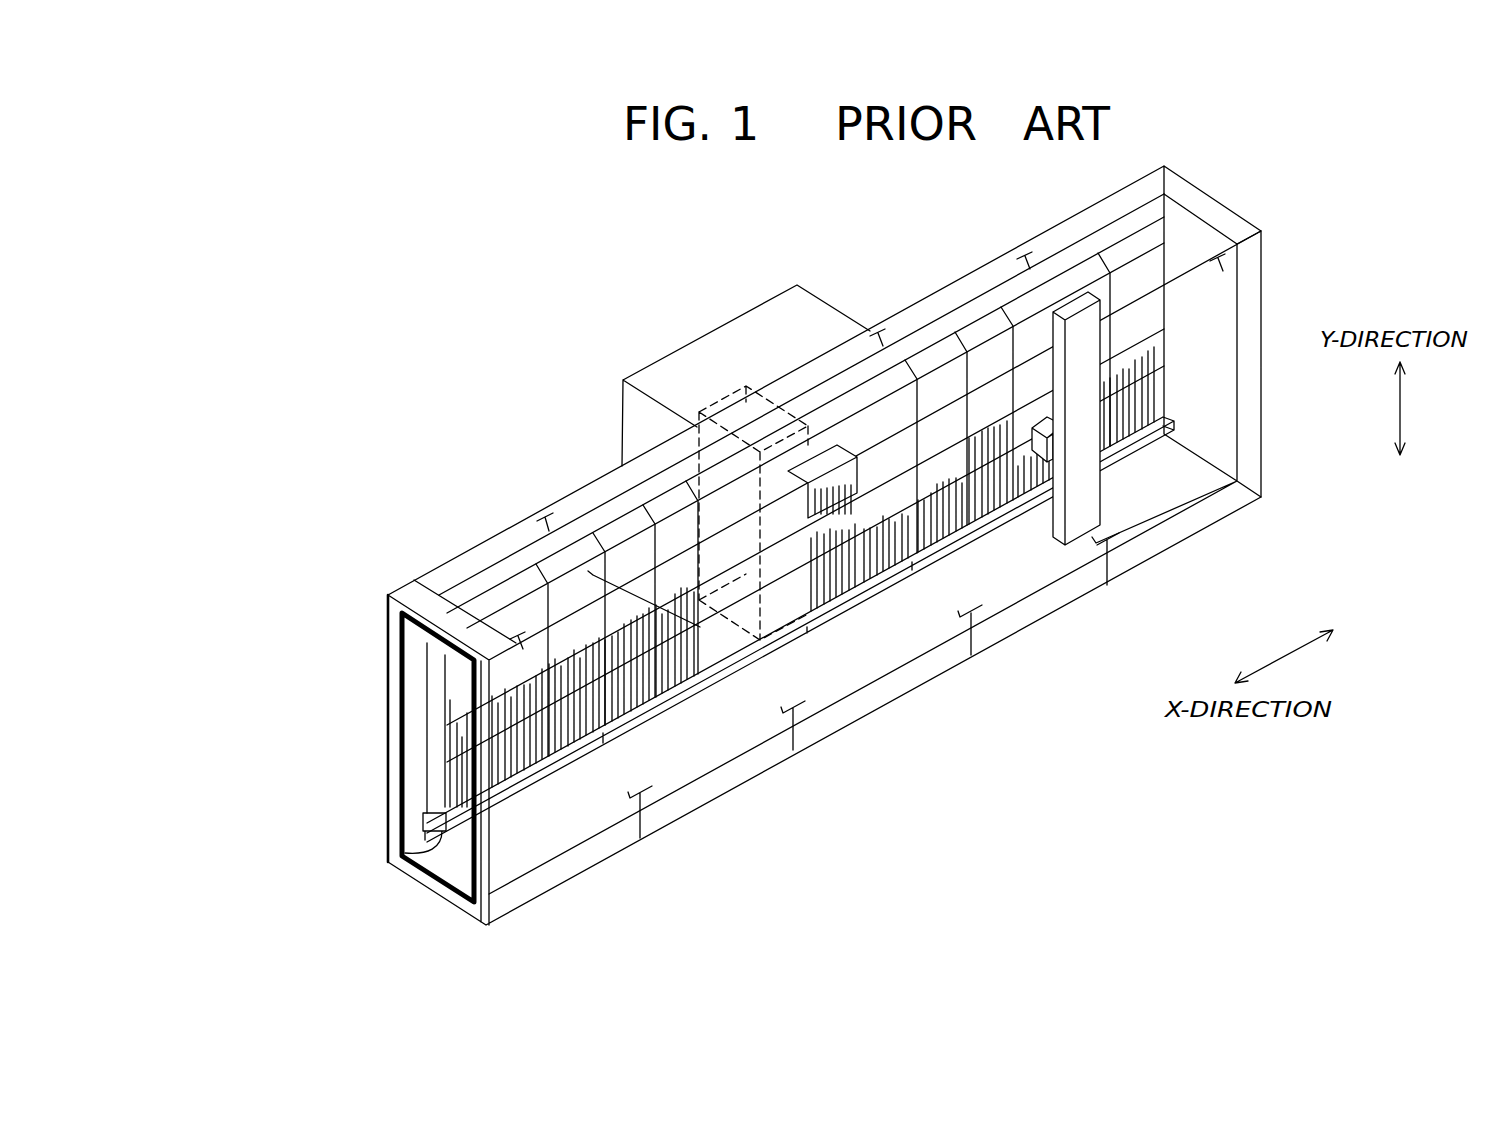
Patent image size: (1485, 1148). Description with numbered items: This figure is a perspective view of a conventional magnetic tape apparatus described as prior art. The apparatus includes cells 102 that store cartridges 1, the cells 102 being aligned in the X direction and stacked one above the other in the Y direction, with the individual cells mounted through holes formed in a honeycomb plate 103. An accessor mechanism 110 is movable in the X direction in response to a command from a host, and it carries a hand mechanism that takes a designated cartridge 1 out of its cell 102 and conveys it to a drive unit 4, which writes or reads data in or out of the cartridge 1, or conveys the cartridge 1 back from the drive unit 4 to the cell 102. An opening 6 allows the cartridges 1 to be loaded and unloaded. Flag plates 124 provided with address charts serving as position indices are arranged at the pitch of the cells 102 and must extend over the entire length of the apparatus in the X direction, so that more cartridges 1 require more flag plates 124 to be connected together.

The cartridge 1 is at (495, 753).
The drive unit 4 is at (803, 632).
The opening 6 is at (843, 492).
The cell 102 is at (700, 628).
The honeycomb plate 103 is at (453, 873).
The accessor mechanism 110 is at (1052, 373).
The flag plate 124 is at (442, 831).